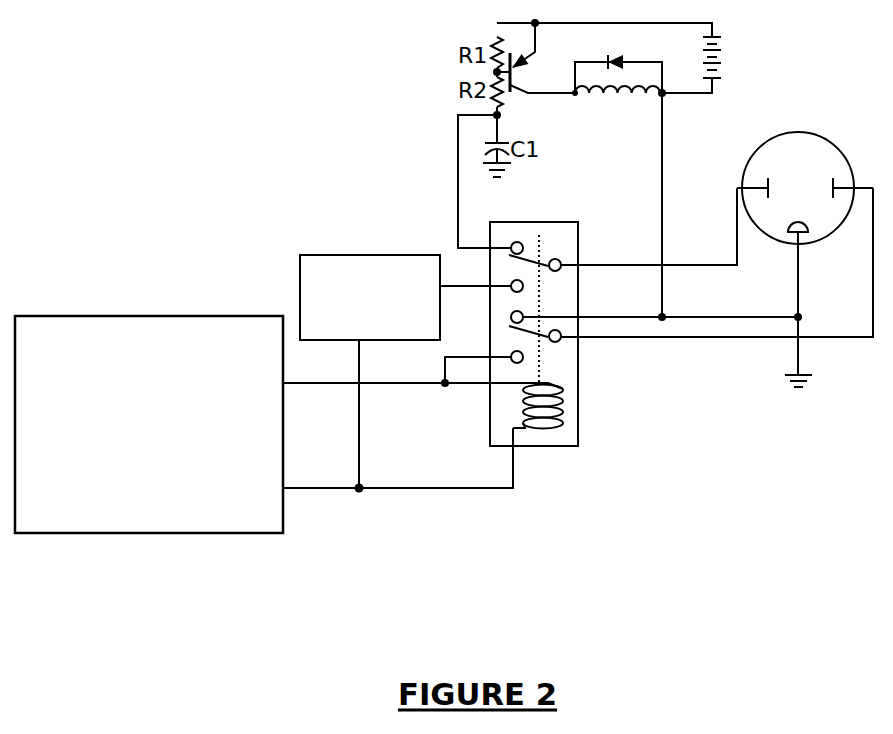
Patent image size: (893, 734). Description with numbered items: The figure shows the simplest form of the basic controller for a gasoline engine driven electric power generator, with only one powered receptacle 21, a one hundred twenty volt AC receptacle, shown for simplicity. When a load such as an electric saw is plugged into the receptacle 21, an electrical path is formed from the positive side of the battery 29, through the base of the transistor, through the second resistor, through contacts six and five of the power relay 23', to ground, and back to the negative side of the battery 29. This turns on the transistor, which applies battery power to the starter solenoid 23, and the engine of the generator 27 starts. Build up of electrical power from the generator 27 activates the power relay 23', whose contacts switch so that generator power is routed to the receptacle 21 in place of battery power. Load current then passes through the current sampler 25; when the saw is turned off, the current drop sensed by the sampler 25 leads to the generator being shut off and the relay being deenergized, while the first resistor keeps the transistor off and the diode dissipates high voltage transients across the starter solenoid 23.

The powered receptacle 21 is at (740, 163).
The starter solenoid 23 is at (619, 97).
The power relay 23' is at (553, 357).
The current sampler 25 is at (296, 249).
The generator 27 is at (205, 540).
The battery 29 is at (722, 52).